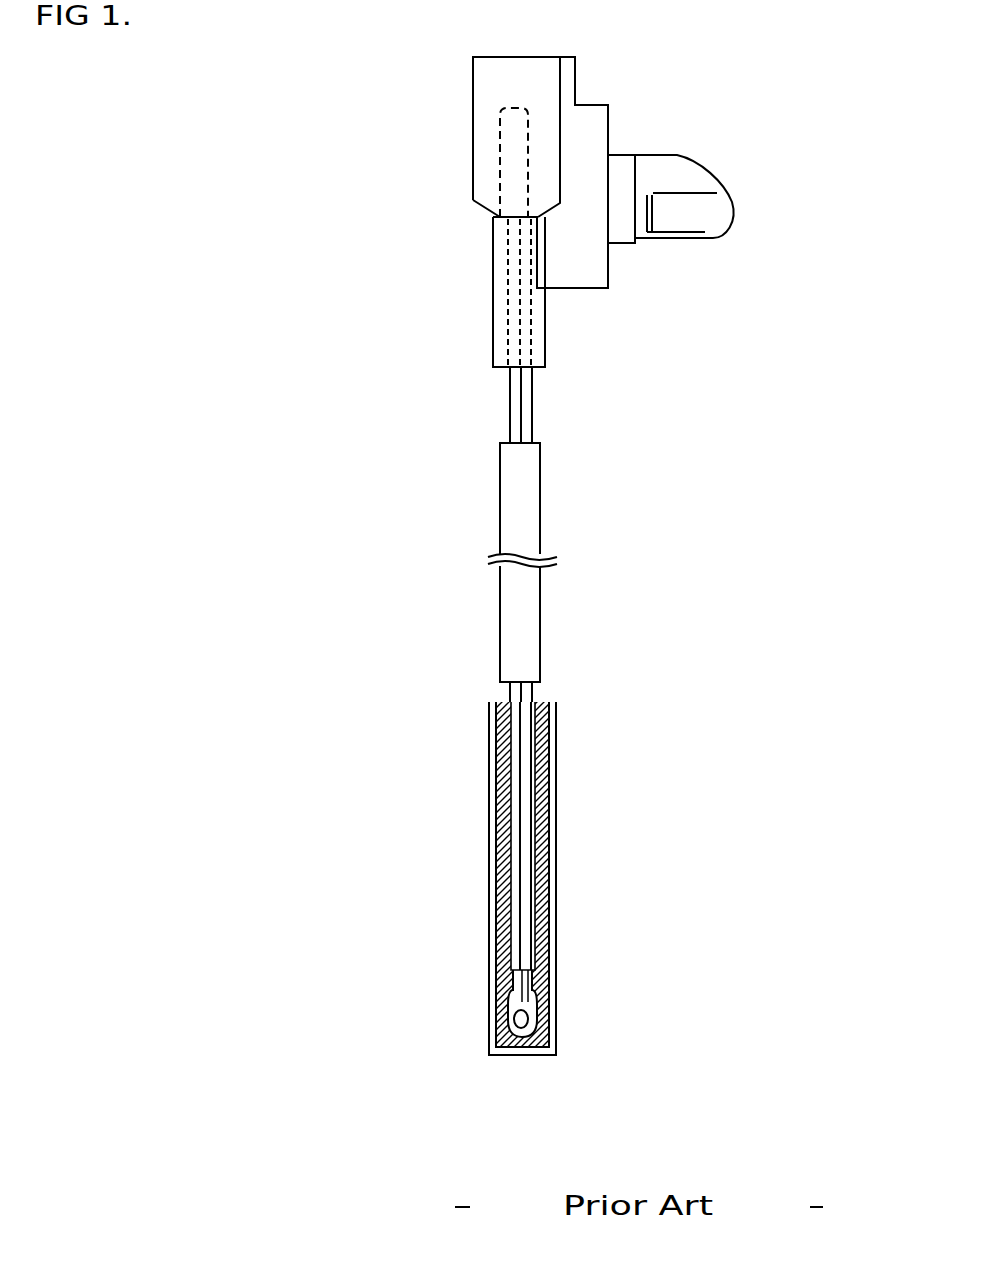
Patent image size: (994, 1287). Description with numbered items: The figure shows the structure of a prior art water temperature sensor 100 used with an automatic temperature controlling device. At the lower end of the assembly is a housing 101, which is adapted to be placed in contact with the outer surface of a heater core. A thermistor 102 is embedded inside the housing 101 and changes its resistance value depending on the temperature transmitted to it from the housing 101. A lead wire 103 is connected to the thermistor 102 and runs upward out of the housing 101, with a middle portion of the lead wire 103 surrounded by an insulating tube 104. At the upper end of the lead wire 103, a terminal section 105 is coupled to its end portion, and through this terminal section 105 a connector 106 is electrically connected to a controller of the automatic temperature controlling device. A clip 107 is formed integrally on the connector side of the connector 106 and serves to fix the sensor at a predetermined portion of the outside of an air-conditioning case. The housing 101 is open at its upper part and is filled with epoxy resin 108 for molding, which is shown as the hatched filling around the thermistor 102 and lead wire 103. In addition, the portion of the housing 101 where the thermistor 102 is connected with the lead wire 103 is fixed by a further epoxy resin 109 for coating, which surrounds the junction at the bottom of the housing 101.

The water temperature sensor 100 is at (704, 566).
The housing 101 is at (556, 779).
The thermistor 102 is at (527, 1022).
The lead wire 103 is at (530, 873).
The insulating tube 104 is at (540, 477).
The terminal section 105 is at (500, 163).
The connector 106 is at (473, 112).
The clip 107 is at (697, 213).
The epoxy resin for molding 108 is at (542, 919).
The epoxy resin for coating 109 is at (537, 1000).